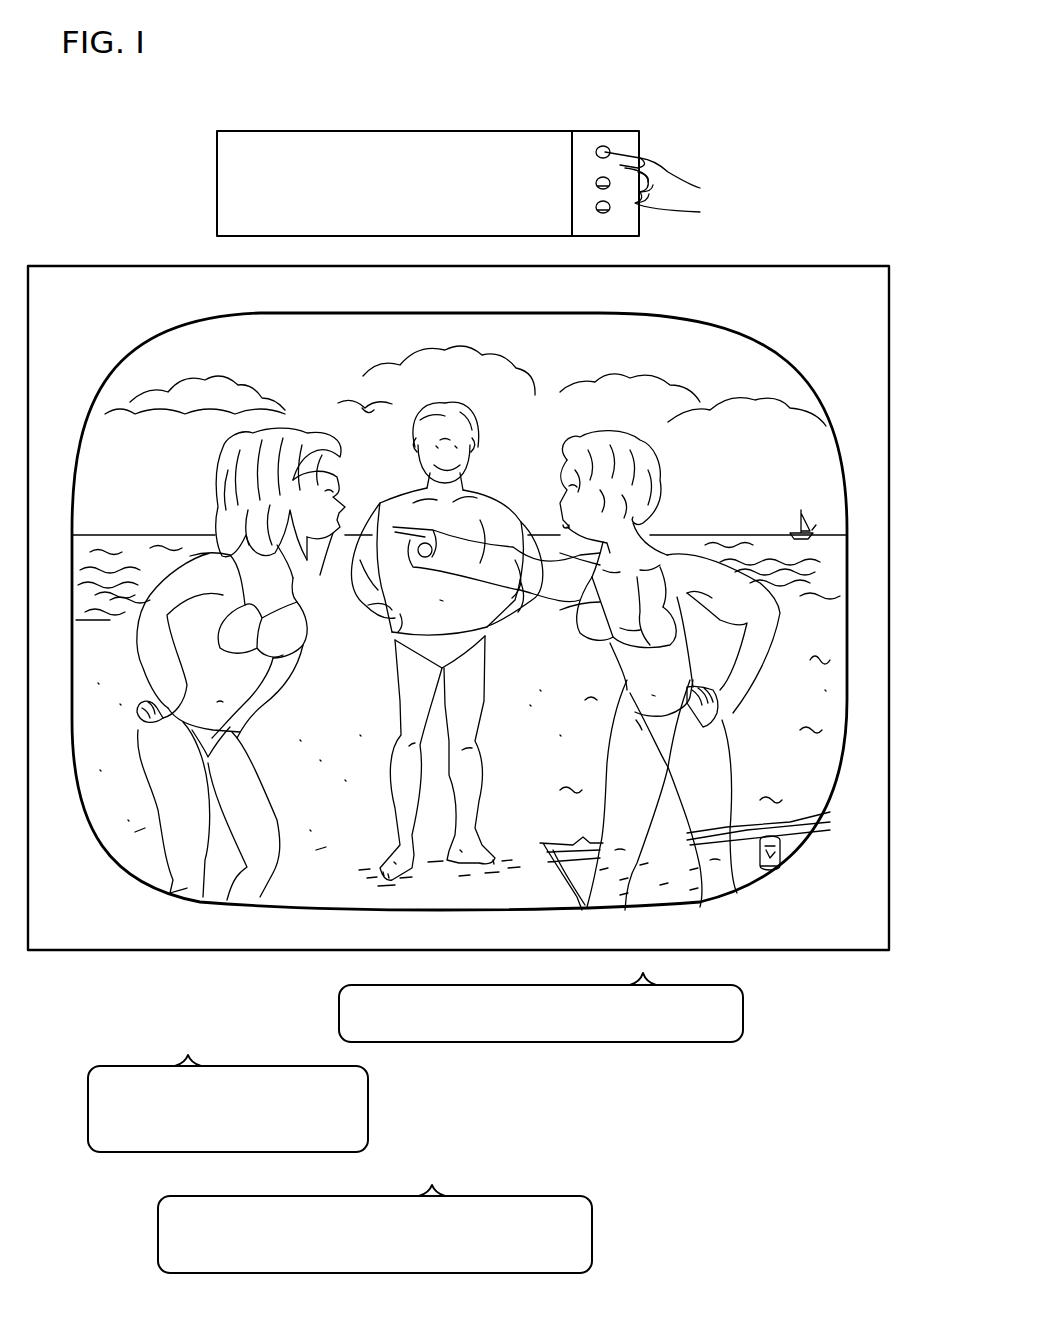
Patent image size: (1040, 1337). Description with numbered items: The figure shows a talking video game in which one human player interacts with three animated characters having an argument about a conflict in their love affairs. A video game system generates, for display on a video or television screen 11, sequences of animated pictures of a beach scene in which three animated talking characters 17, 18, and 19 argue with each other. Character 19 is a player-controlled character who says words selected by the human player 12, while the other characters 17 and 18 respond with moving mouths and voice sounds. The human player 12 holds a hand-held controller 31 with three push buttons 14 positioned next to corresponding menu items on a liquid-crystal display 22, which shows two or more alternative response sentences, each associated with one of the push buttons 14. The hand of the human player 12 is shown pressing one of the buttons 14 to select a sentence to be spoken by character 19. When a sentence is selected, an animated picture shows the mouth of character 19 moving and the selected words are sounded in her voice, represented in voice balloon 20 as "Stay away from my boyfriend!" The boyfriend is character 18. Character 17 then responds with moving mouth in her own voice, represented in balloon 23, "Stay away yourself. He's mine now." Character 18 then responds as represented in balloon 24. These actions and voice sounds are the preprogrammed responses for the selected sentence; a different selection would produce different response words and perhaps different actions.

The hand-held controller 31 is at (463, 115).
The liquid-crystal display 22 is at (415, 136).
The push buttons 14 is at (603, 150).
The human player 12 is at (675, 180).
The video or television screen 11 is at (768, 370).
The animated talking character 17 is at (185, 893).
The animated talking character 18 is at (479, 857).
The player-controlled character 19 is at (718, 878).
The voice balloon 20 is at (339, 1007).
The balloon 23 is at (360, 1112).
The balloon 24 is at (583, 1238).